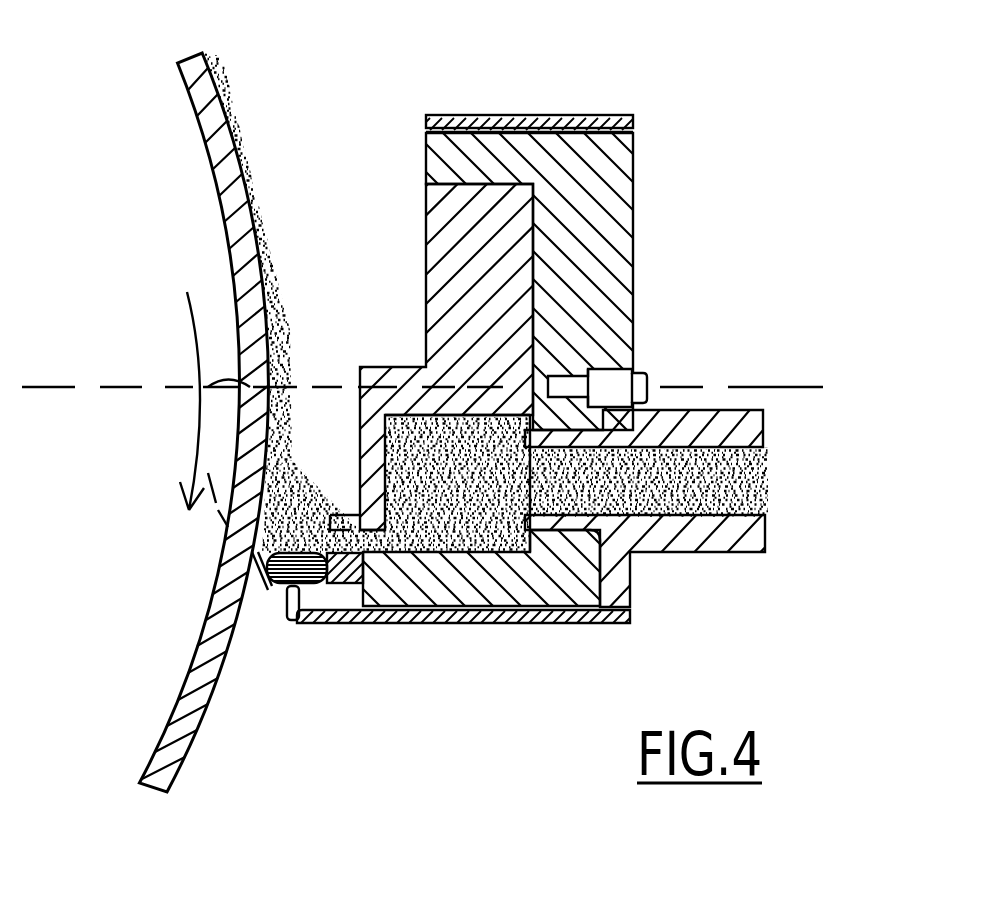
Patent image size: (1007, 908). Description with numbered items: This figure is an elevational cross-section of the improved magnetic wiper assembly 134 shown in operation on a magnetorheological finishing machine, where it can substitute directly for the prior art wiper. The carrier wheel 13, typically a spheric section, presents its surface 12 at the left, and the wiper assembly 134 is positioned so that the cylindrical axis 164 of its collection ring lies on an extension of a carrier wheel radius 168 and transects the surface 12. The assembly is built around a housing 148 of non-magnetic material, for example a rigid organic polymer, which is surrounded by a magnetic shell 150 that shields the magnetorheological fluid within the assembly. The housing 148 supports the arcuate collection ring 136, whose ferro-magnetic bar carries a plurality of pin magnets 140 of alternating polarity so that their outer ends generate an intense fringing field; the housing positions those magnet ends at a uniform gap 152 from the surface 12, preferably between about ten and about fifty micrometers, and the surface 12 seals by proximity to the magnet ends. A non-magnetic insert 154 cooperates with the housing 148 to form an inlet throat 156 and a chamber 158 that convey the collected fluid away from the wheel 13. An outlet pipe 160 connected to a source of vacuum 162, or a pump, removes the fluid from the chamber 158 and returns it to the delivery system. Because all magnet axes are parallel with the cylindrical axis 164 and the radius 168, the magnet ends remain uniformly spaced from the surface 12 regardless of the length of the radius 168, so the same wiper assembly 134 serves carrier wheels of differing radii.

The surface 12 is at (216, 697).
The carrier wheel 13 is at (180, 619).
The magnetic wiper assembly 134 is at (757, 42).
The arcuate collection ring 136 is at (350, 585).
The pin magnets 140 is at (300, 590).
The housing 148 is at (618, 270).
The magnetic shell 150 is at (532, 114).
The gap 152 is at (254, 560).
The non-magnetic insert 154 is at (443, 263).
The inlet throat 156 is at (397, 548).
The chamber 158 is at (505, 548).
The outlet pipe 160 is at (685, 542).
The source of vacuum 162 is at (762, 478).
The cylindrical axis 164 is at (771, 387).
The carrier wheel radius 168 is at (56, 387).